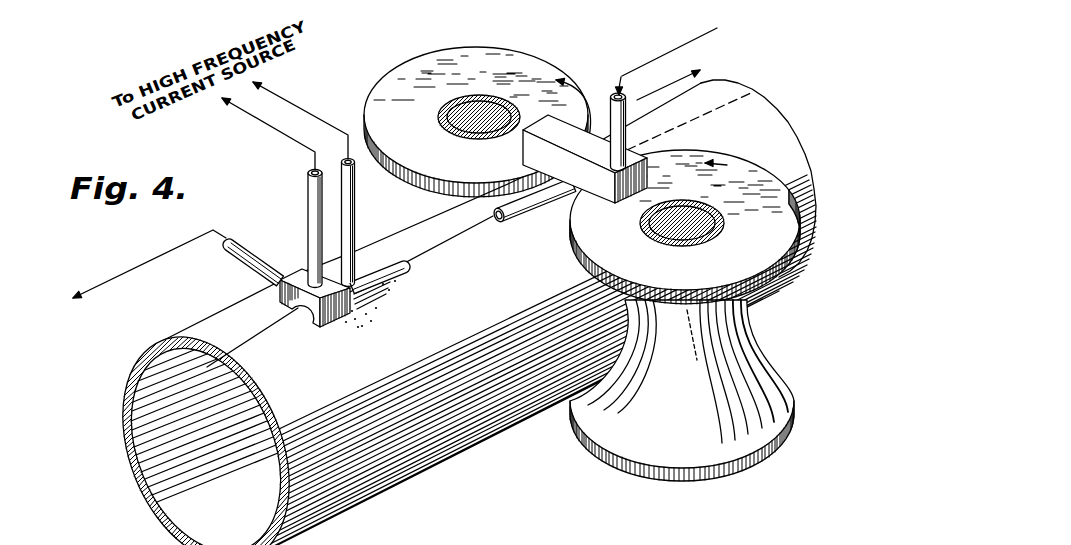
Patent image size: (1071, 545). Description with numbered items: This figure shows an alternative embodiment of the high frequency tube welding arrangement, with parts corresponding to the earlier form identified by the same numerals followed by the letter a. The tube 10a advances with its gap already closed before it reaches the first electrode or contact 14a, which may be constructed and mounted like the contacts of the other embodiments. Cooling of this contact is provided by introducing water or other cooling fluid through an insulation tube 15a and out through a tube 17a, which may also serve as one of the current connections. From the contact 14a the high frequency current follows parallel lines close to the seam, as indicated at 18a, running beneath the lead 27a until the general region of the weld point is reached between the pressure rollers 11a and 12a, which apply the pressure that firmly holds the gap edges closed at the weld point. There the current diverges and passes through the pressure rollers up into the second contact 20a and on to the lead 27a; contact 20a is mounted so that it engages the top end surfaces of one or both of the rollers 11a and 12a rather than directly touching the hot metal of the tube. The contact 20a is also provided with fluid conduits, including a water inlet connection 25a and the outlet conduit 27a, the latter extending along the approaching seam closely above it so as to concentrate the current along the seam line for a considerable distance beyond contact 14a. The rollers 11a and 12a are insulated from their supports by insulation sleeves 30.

The tube 10a is at (408, 228).
The pressure roller 11a is at (735, 163).
The pressure roller 12a is at (390, 83).
The contact 14a is at (309, 318).
The insulation tube 15a is at (236, 259).
The tube 17a is at (308, 192).
The current path 18a is at (403, 222).
The contact 20a is at (524, 152).
The water inlet connection 25a is at (627, 120).
The lead 27a is at (356, 194).
The insulation sleeve 30 is at (440, 126).